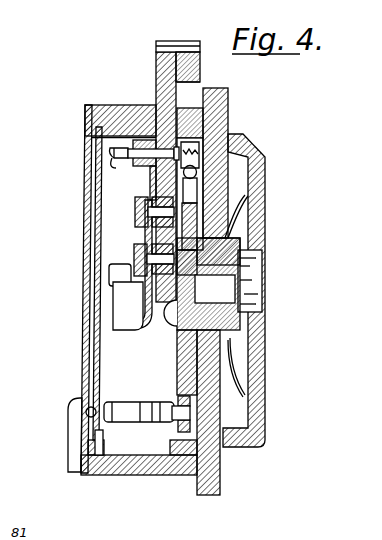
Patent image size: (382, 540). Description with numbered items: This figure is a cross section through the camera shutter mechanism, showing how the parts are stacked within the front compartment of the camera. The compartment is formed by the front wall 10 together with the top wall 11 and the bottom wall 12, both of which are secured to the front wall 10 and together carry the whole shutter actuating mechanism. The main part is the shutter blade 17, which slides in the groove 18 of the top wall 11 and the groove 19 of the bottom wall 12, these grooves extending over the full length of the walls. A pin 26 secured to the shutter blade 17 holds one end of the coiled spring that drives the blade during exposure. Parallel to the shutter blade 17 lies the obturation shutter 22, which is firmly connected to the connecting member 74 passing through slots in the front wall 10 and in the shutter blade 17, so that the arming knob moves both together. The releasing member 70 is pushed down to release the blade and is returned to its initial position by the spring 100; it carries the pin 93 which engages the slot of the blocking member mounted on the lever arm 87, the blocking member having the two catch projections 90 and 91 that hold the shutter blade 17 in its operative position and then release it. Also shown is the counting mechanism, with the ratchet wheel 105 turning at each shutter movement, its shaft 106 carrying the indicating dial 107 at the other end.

The compartment front wall 10 is at (207, 468).
The top wall 11 is at (149, 118).
The bottom wall 12 is at (151, 478).
The shutter blade 17 is at (98, 446).
The groove 18 is at (131, 106).
The groove 19 is at (98, 456).
The obturation shutter 22 is at (84, 263).
The pin 26 is at (137, 412).
The releasing member 70 is at (165, 51).
The connecting member 74 is at (68, 462).
The lever arm 87 is at (149, 262).
The catch projection 90 is at (138, 304).
The catch projection 91 is at (118, 272).
The pin 93 is at (152, 210).
The spring 100 is at (114, 156).
The ratchet wheel 105 is at (178, 366).
The shaft 106 is at (229, 300).
The indicating dial 107 is at (257, 184).